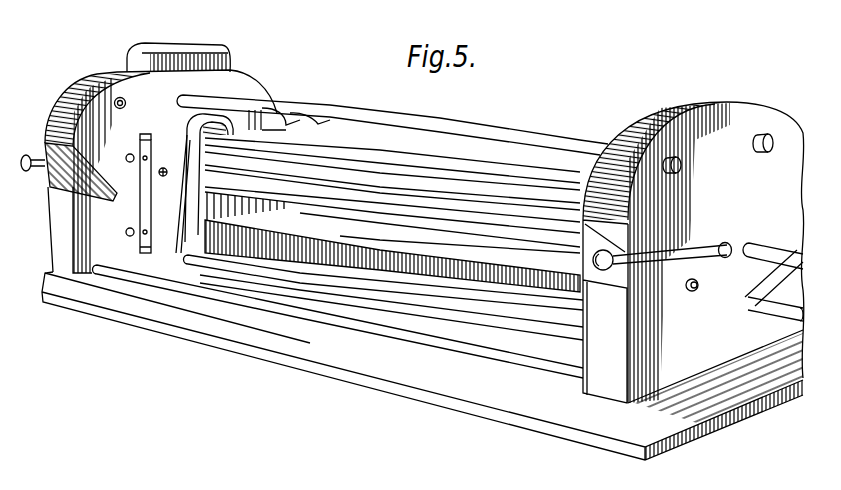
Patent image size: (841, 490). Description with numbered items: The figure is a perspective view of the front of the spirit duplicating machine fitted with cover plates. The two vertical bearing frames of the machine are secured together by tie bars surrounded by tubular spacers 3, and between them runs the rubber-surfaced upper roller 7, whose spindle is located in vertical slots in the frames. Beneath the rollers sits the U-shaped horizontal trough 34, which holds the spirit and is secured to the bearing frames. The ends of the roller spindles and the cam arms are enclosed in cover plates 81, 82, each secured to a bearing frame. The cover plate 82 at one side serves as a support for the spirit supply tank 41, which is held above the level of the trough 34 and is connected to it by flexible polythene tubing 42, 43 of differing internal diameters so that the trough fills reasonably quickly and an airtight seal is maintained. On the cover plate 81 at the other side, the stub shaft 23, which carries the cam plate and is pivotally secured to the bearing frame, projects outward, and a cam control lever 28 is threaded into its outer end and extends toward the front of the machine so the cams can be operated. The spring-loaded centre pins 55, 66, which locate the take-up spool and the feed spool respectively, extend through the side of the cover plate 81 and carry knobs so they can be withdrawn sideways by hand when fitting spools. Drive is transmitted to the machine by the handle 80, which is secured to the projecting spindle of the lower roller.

The tubular spacers 3 is at (355, 112).
The upper roller 7 is at (358, 150).
The stub shaft 23 is at (727, 243).
The cam control lever 28 is at (33, 151).
The trough 34 is at (360, 217).
The tank 41 is at (165, 49).
The flexible tubing 42 is at (272, 112).
The flexible tubing 43 is at (314, 120).
The centre pin 55 is at (670, 157).
The centre pin 66 is at (763, 133).
The handle 80 is at (746, 303).
The cover plate 81 is at (638, 127).
The cover plate 82 is at (78, 82).